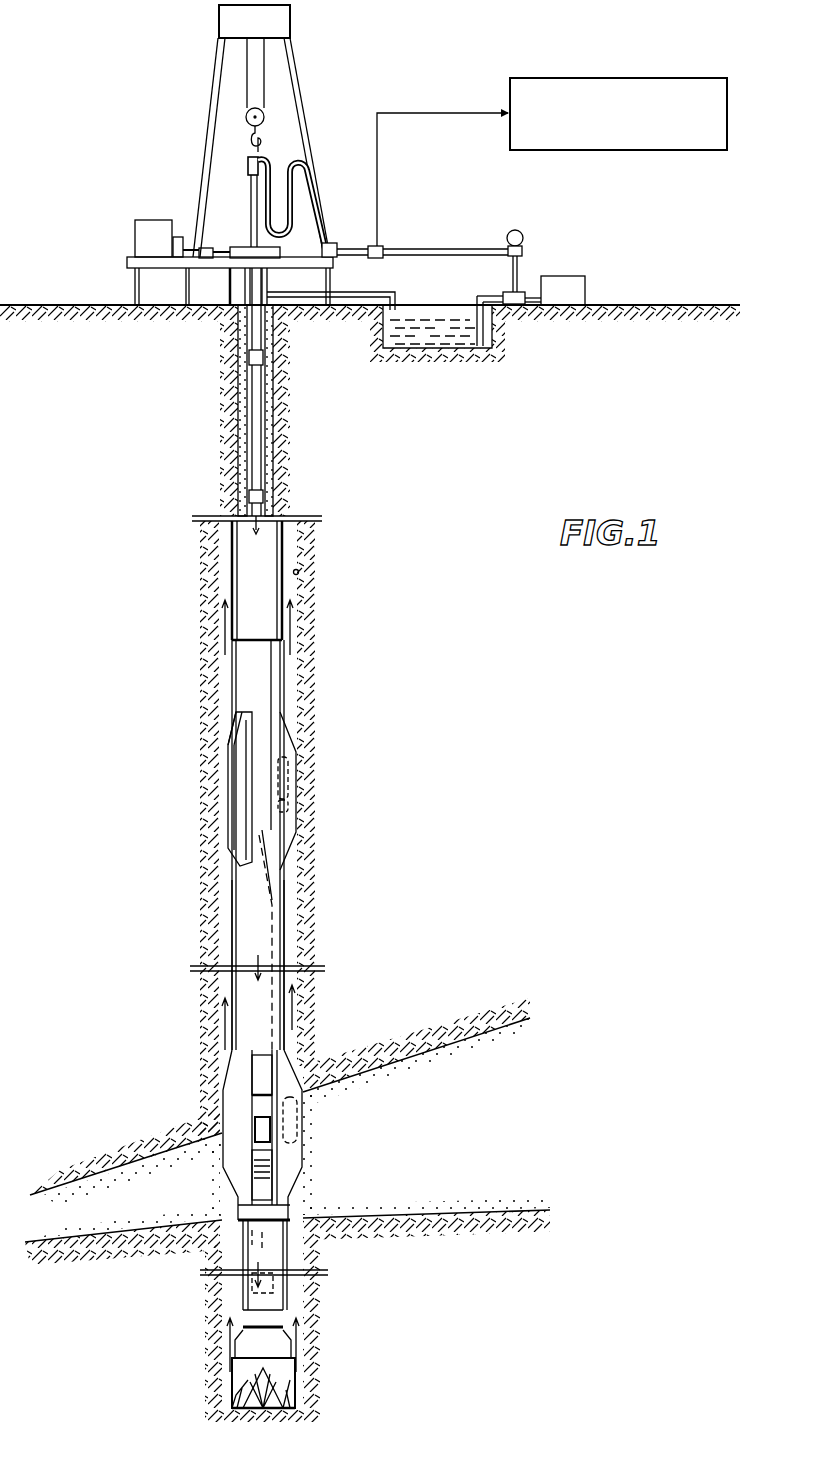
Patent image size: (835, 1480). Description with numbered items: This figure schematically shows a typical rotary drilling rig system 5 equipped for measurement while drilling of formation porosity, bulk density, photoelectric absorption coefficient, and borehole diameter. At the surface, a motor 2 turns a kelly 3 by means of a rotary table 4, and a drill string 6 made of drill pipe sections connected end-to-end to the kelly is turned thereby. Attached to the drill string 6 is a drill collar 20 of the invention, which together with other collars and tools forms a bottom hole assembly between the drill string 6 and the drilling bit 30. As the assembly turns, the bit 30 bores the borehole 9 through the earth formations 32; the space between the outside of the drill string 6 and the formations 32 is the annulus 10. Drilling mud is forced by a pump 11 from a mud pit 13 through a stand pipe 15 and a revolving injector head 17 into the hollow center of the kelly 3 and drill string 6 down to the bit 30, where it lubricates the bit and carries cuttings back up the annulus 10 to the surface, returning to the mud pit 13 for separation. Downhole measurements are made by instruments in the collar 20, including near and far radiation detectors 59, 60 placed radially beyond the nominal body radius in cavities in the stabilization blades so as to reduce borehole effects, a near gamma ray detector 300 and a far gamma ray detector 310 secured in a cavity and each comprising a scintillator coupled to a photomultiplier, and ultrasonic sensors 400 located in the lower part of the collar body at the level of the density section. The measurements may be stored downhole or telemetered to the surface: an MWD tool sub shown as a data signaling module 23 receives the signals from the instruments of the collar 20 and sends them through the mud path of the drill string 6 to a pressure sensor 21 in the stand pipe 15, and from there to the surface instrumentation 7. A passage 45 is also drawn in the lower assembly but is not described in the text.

The rotary drilling rig system 5 is at (204, 50).
The revolving injector head 17 is at (248, 166).
The kelly 3 is at (251, 191).
The motor 2 is at (135, 228).
The rotary table 4 is at (272, 257).
The pressure sensor 21 is at (388, 245).
The stand pipe 15 is at (464, 246).
The surface instrumentation 7 is at (661, 152).
The pump 11 is at (587, 284).
The mud pit 13 is at (458, 340).
The drill string 6 is at (258, 404).
The annulus 10 is at (265, 485).
The borehole 9 is at (298, 572).
The far radiation detector 60 is at (290, 770).
The near radiation detector 59 is at (300, 803).
The drill collar 20 is at (293, 1052).
The ultrasonic sensors 400 is at (255, 1130).
The near gamma ray detector 300 is at (305, 1112).
The far gamma ray detector 310 is at (300, 1150).
The data signaling module 23 is at (292, 1244).
The flow passage 45 is at (258, 1283).
The drilling bit 30 is at (292, 1396).
The earth formations 32 is at (440, 1322).